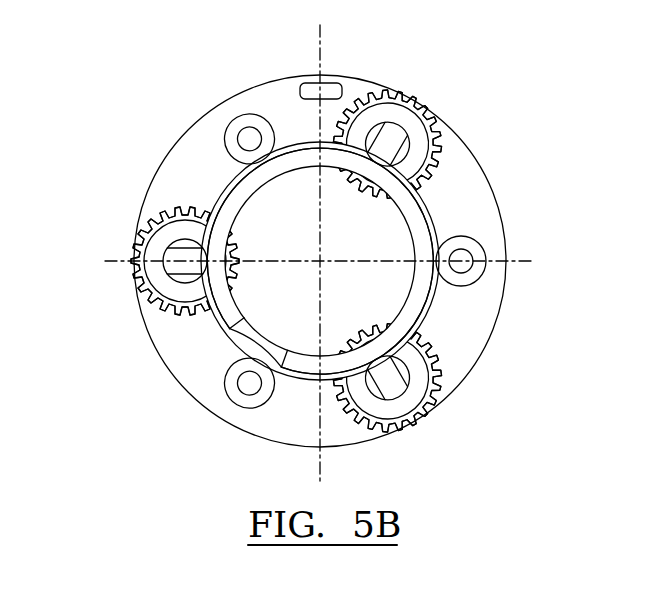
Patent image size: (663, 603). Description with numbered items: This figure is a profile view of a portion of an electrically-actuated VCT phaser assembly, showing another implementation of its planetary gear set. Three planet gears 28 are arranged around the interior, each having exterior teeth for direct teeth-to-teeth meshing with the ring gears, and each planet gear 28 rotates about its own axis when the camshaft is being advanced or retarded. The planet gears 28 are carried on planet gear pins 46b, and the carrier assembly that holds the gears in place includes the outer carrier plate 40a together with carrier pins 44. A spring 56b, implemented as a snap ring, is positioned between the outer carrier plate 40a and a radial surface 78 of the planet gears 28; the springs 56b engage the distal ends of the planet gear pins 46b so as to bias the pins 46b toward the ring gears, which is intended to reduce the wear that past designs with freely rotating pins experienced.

The planet gear 28 is at (142, 304).
The outer carrier plate 40a is at (480, 219).
The carrier pin 44 is at (249, 138).
The planet gear pin 46b is at (178, 247).
The spring 56b is at (298, 362).
The radial surface 78 is at (160, 247).